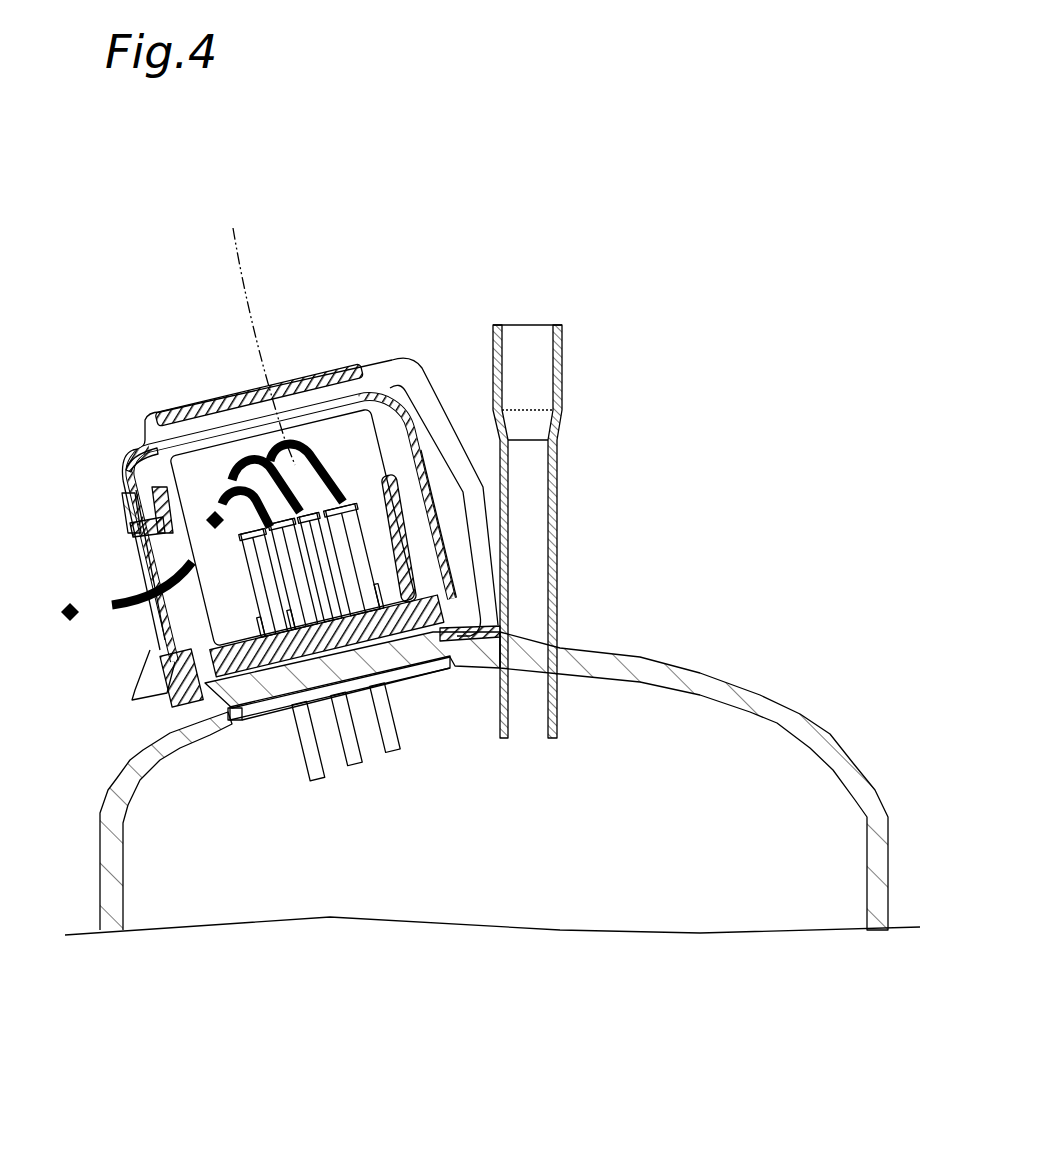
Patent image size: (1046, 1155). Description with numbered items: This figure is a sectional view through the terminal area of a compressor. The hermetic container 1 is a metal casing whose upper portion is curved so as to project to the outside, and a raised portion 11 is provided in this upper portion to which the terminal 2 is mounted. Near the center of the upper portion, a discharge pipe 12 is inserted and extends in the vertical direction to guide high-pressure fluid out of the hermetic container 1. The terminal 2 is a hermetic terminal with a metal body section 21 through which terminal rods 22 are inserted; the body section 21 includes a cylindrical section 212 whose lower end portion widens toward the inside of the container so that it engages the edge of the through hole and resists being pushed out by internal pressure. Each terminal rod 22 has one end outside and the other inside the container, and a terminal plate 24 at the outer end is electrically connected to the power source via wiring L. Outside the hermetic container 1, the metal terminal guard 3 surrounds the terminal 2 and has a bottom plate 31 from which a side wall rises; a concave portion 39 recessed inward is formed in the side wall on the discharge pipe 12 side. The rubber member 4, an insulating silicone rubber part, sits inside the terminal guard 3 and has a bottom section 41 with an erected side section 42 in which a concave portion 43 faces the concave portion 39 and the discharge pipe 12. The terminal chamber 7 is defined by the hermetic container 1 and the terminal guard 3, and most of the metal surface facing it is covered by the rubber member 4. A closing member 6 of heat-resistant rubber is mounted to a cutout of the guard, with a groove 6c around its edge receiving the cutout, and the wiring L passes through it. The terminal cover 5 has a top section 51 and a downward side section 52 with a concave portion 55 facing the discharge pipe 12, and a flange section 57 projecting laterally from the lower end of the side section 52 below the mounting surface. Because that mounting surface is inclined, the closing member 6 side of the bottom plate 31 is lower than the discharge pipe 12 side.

The hermetic container 1 is at (714, 670).
The terminal 2 is at (398, 793).
The terminal guard 3 is at (432, 655).
The rubber member 4 is at (414, 520).
The terminal cover 5 is at (346, 356).
The closing member 6 is at (128, 552).
The groove 6c is at (130, 505).
The terminal chamber 7 is at (233, 612).
The raised portion 11 is at (205, 705).
The discharge pipe 12 is at (538, 393).
The body section 21 is at (246, 731).
The terminal rods 22 is at (310, 770).
The terminal plate 24 is at (236, 485).
The bottom plate 31 is at (420, 672).
The concave portion 39 is at (405, 602).
The bottom section 41 is at (462, 634).
The side section 42 is at (372, 492).
The concave portion 43 is at (410, 566).
The top section 51 is at (208, 398).
The side section 52 is at (127, 470).
The concave portion 55 is at (436, 531).
The flange section 57 is at (148, 703).
The cylindrical section 212 is at (225, 726).
The wiring L is at (257, 327).